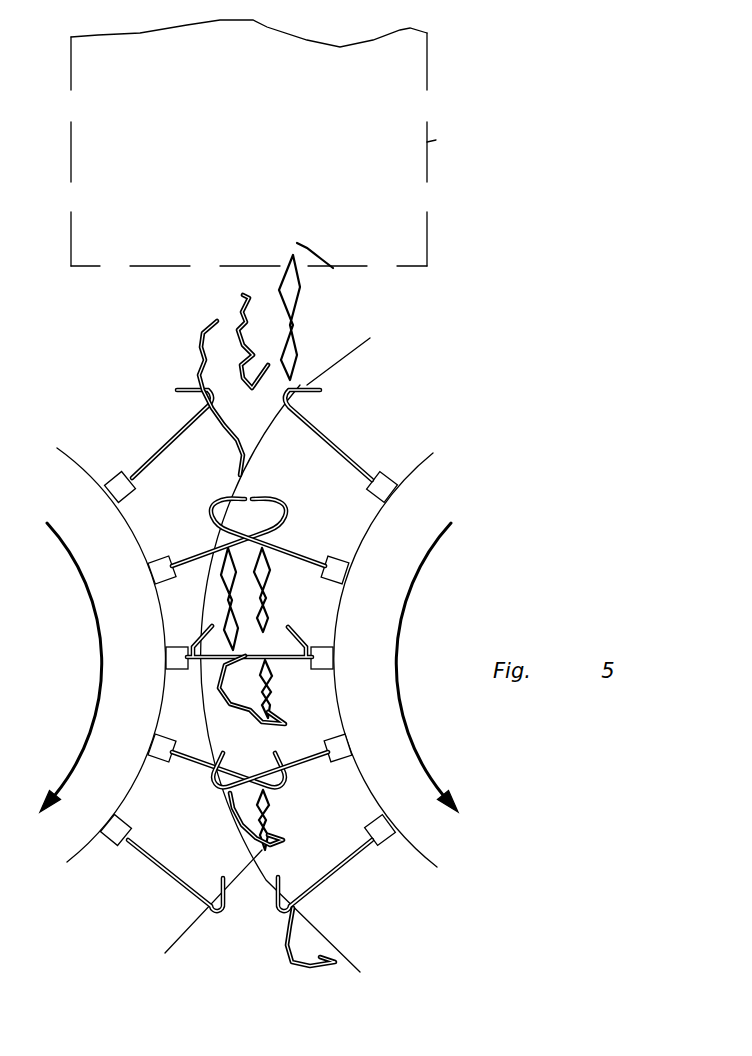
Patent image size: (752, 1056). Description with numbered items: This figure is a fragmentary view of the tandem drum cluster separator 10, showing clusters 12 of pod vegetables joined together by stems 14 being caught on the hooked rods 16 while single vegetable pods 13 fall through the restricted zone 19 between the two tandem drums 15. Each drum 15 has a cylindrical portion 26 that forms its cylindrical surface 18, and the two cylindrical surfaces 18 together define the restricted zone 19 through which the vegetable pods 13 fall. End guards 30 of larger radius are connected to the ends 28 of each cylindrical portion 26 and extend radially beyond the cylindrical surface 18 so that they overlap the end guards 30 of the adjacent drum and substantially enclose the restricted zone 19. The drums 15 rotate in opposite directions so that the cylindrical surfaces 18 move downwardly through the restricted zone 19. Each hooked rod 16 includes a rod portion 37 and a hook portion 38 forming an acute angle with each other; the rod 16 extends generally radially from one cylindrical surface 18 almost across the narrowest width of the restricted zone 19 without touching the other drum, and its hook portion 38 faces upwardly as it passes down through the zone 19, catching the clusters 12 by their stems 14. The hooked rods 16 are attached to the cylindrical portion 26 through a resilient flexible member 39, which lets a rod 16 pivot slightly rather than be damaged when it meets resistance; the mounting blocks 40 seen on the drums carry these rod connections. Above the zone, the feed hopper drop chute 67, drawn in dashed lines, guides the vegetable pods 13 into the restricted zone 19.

The tandem drum cluster separator 10 is at (58, 447).
The clusters 12 is at (268, 594).
The vegetable pods 13 is at (240, 320).
The stems 14 is at (225, 540).
The tandem drums 15 is at (427, 455).
The hooked rods 16 is at (158, 873).
The cylindrical surface 18 is at (370, 520).
The restricted zone 19 is at (193, 475).
The cylindrical portion 26 is at (122, 520).
The ends 28 is at (78, 465).
The end guards 30 is at (35, 641).
The rod portion 37 is at (163, 440).
The hook portion 38 is at (300, 385).
The resilient flexible member 39 is at (340, 555).
The pin mounting block 40 is at (343, 573).
The feed hopper drop chute 67 is at (433, 141).